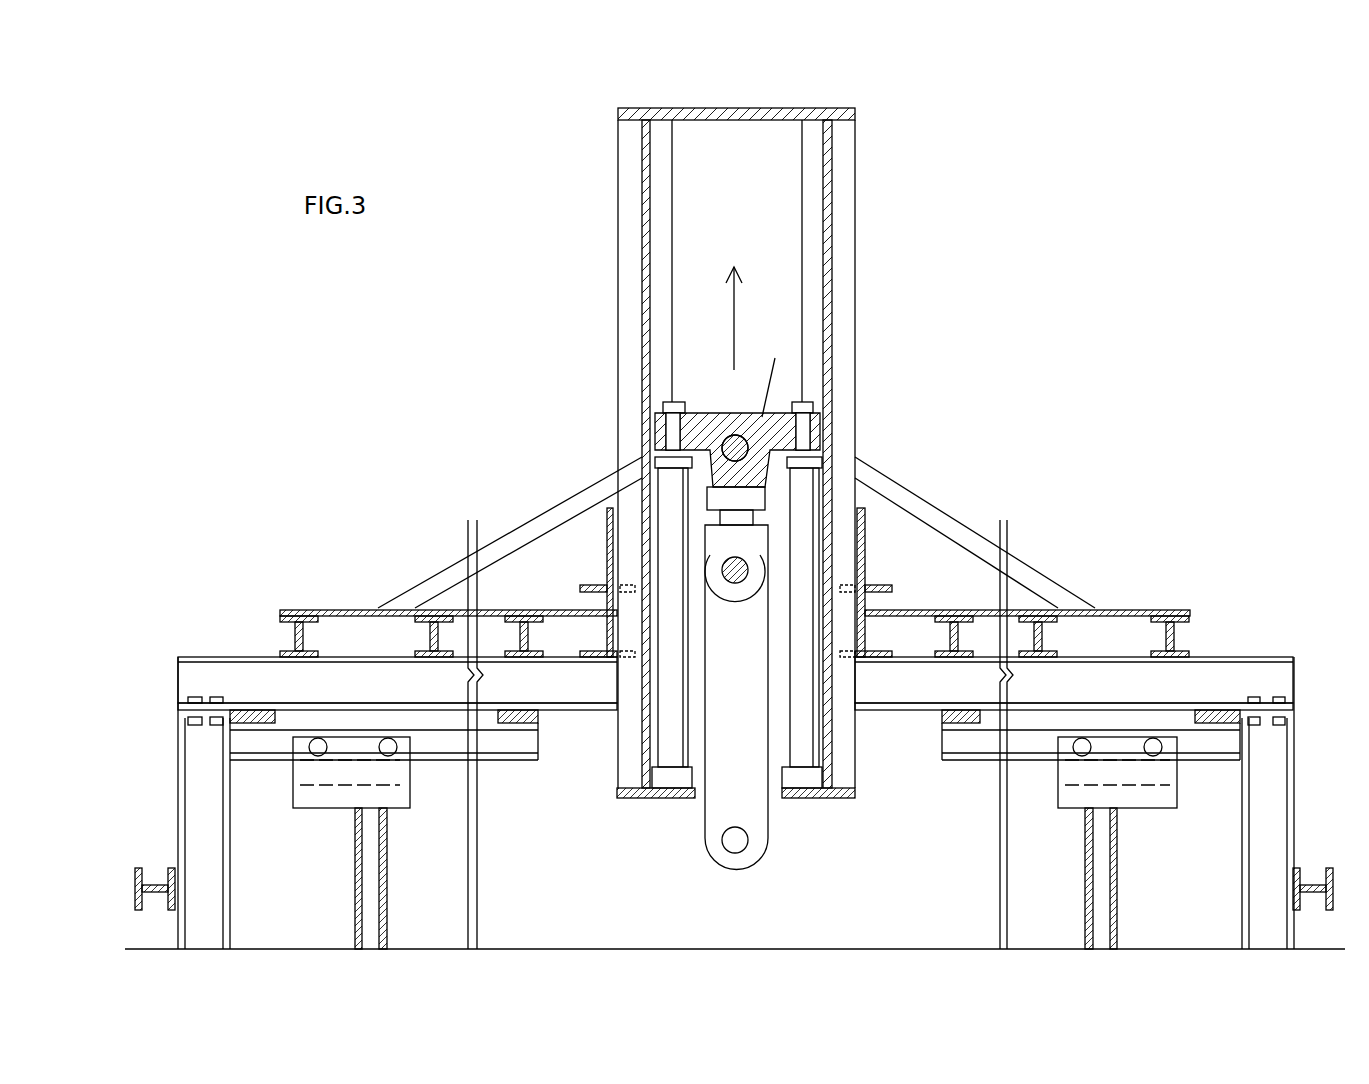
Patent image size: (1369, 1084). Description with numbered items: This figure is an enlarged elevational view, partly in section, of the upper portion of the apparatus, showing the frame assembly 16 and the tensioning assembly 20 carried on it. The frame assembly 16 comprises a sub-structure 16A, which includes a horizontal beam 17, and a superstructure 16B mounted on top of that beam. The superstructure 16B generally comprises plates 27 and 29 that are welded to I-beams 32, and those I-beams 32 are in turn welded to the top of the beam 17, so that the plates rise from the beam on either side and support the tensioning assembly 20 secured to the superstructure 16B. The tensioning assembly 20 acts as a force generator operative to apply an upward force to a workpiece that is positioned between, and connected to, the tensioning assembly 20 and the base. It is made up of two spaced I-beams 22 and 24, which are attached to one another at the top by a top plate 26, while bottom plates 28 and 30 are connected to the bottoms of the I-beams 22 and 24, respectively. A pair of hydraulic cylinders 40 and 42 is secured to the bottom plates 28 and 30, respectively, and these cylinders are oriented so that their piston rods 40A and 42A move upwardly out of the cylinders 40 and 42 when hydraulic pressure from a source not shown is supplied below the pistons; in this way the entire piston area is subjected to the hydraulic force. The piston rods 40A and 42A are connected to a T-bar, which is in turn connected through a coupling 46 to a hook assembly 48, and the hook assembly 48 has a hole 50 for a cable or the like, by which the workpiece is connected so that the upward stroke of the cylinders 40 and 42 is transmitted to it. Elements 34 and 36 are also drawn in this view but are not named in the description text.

The frame assembly 16 is at (734, 691).
The sub-structure 16A is at (1235, 670).
The superstructure 16B is at (352, 602).
The beam 17 is at (205, 665).
The tensioning assembly 20 is at (750, 471).
The I-beam 22 is at (625, 332).
The I-beam 24 is at (842, 183).
The top plate 26 is at (743, 110).
The plate 27 is at (1078, 610).
The bottom plate 28 is at (655, 793).
The plate 29 is at (387, 600).
The bottom plate 30 is at (822, 793).
The I-beams 32 is at (295, 640).
The right vertical plate 34 is at (863, 640).
The left vertical plate 36 is at (610, 638).
The hydraulic cylinder 40 is at (672, 502).
The piston rod 40A is at (675, 433).
The hydraulic cylinder 42 is at (805, 540).
The piston rod 42A is at (803, 438).
The coupling 46 is at (752, 502).
The hook assembly 48 is at (745, 805).
The hole 50 is at (738, 838).